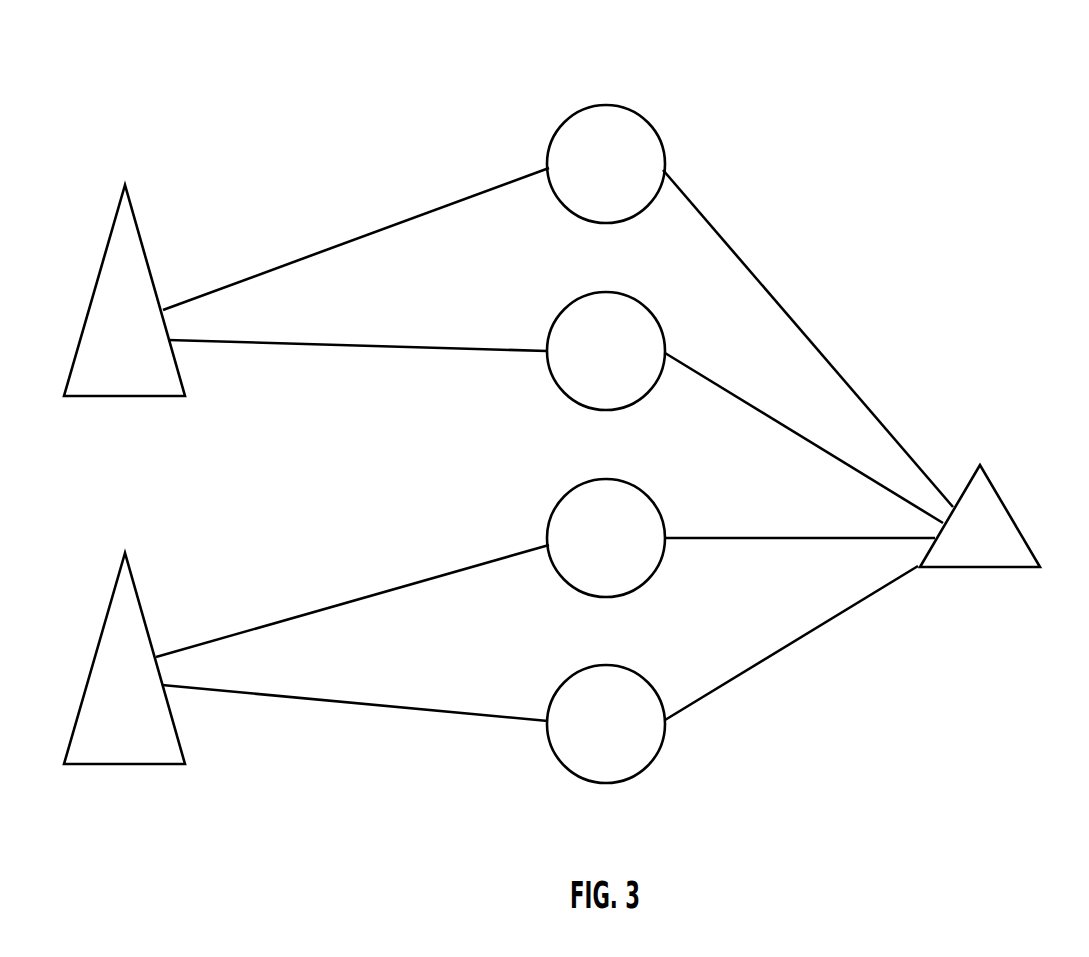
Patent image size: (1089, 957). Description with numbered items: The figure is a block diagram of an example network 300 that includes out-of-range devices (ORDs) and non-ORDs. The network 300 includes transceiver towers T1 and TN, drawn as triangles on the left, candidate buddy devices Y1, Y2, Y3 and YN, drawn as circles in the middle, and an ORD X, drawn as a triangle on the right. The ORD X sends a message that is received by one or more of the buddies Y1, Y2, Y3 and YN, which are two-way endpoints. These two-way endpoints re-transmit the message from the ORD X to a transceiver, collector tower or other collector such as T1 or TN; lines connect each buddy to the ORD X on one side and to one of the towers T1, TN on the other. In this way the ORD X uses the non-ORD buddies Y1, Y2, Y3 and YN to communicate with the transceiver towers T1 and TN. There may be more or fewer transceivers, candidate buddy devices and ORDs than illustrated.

The network 300 is at (881, 41).
The transceiver tower T1 is at (112, 390).
The transceiver tower TN is at (111, 758).
The candidate buddy device Y1 is at (592, 178).
The candidate buddy device Y2 is at (592, 365).
The candidate buddy device Y3 is at (592, 552).
The candidate buddy device YN is at (591, 738).
The ORD X is at (968, 545).